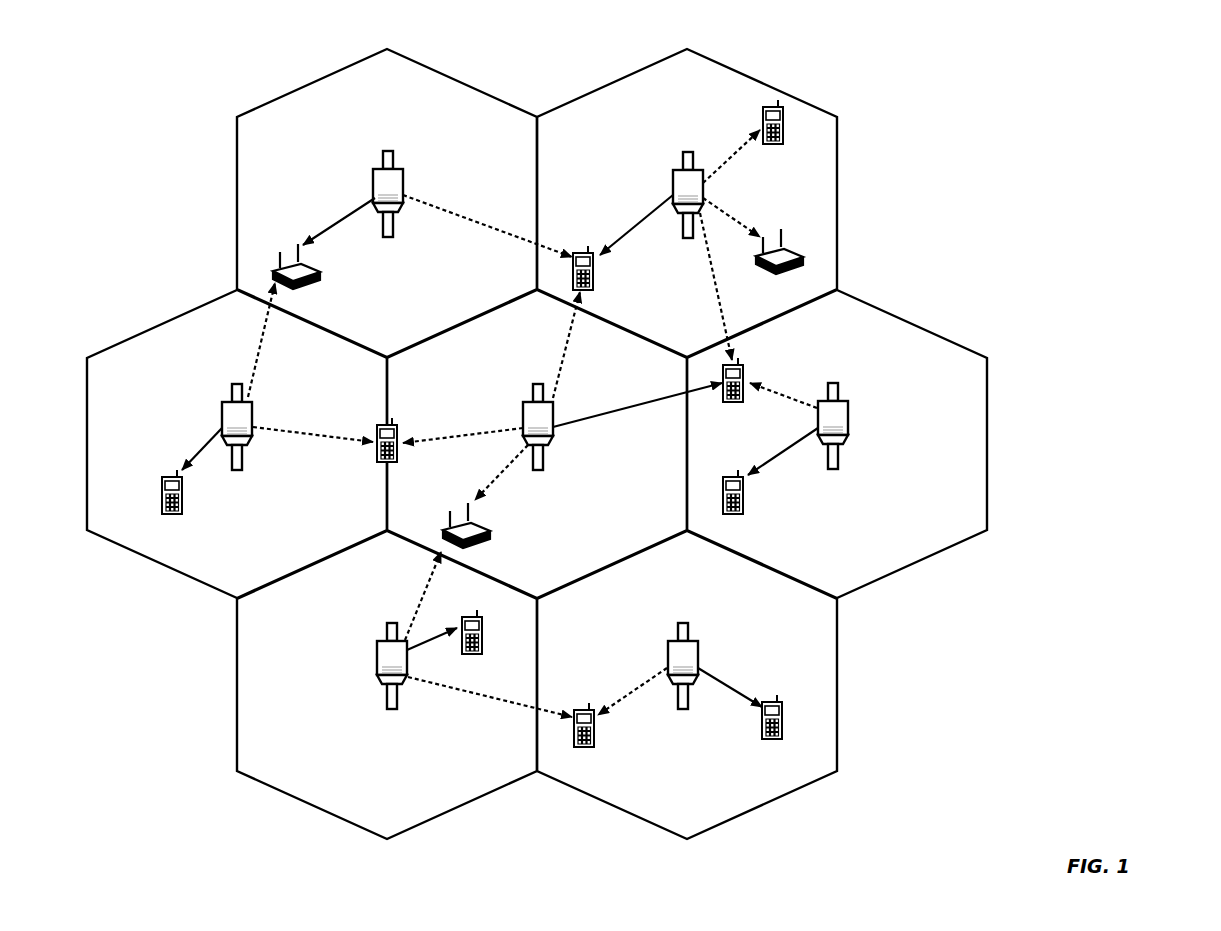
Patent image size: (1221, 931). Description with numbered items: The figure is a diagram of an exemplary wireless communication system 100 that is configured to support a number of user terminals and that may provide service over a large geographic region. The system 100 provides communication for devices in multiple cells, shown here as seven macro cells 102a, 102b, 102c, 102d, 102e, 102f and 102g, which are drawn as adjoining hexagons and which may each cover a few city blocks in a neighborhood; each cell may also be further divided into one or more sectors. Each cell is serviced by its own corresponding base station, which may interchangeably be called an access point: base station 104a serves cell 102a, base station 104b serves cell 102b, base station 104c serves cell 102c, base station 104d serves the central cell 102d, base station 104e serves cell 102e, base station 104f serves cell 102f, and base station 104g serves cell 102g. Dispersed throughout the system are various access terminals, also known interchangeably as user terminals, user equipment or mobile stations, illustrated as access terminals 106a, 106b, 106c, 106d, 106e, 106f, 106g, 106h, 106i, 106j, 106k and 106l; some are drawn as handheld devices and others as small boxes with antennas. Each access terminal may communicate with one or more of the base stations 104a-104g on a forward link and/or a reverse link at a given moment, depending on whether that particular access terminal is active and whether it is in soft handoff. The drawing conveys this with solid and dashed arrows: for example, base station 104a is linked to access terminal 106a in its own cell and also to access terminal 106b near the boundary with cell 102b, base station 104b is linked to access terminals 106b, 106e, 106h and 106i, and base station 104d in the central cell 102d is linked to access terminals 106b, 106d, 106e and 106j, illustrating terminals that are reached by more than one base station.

The wireless communication system 100 is at (933, 78).
The macro cell 102a is at (313, 82).
The macro cell 102b is at (775, 70).
The macro cell 102c is at (166, 322).
The macro cell 102d is at (537, 444).
The macro cell 102e is at (924, 311).
The macro cell 102f is at (236, 686).
The macro cell 102g is at (840, 686).
The base station 104a is at (372, 170).
The base station 104b is at (672, 172).
The base station 104c is at (222, 407).
The base station 104d is at (522, 405).
The base station 104e is at (852, 405).
The base station 104f is at (378, 645).
The base station 104g is at (668, 645).
The access terminal 106a is at (322, 272).
The access terminal 106b is at (580, 253).
The access terminal 106c is at (162, 495).
The access terminal 106d is at (378, 435).
The access terminal 106e is at (748, 375).
The access terminal 106f is at (470, 617).
The access terminal 106g is at (580, 710).
The access terminal 106h is at (806, 250).
The access terminal 106i is at (763, 113).
The access terminal 106j is at (490, 526).
The access terminal 106k is at (724, 478).
The access terminal 106l is at (766, 703).